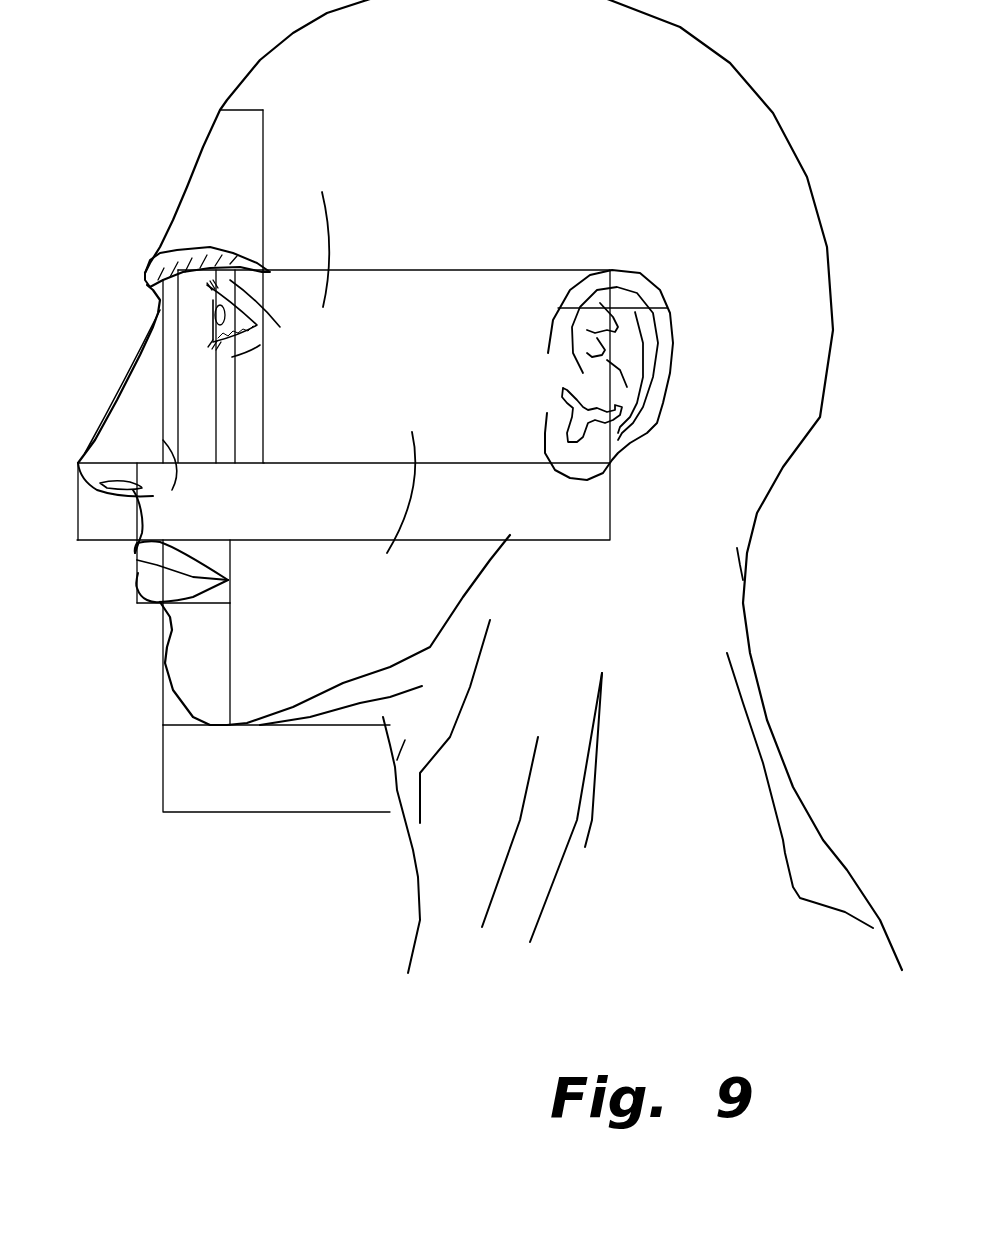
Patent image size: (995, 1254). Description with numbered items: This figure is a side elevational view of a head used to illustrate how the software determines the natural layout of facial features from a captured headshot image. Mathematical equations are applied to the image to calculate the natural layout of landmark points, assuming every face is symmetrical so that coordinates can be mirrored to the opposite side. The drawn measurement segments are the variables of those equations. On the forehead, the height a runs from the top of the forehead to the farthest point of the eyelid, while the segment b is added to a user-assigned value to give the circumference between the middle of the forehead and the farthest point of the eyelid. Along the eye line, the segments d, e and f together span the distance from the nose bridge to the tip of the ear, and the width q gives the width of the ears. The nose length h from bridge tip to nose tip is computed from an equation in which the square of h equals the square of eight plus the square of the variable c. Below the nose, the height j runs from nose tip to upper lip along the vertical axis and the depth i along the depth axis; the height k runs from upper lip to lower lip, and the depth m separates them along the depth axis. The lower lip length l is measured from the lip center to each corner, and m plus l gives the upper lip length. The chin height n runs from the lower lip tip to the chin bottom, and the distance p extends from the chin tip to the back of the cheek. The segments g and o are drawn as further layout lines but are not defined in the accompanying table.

The forehead-to-eyelid height a is at (280, 190).
The forehead-to-eyelid circumference variable b is at (245, 92).
The nose length equation variable c is at (612, 354).
The nose bridge to ear distance segment d is at (343, 405).
The nose bridge to ear distance segment e is at (249, 366).
The nose bridge to ear distance segment f is at (205, 366).
The nose root depth g is at (171, 366).
The nose length h is at (120, 371).
The nose tip to upper lip depth i is at (116, 533).
The nose tip to upper lip height j is at (53, 501).
The upper lip to lower lip height k is at (256, 571).
The lower lip length l is at (183, 624).
The upper lip to lower lip depth m is at (143, 632).
The lower lip to chin height n is at (252, 664).
The jaw width o is at (276, 748).
The chin tip to cheek distance p is at (276, 788).
The ear width q is at (436, 257).